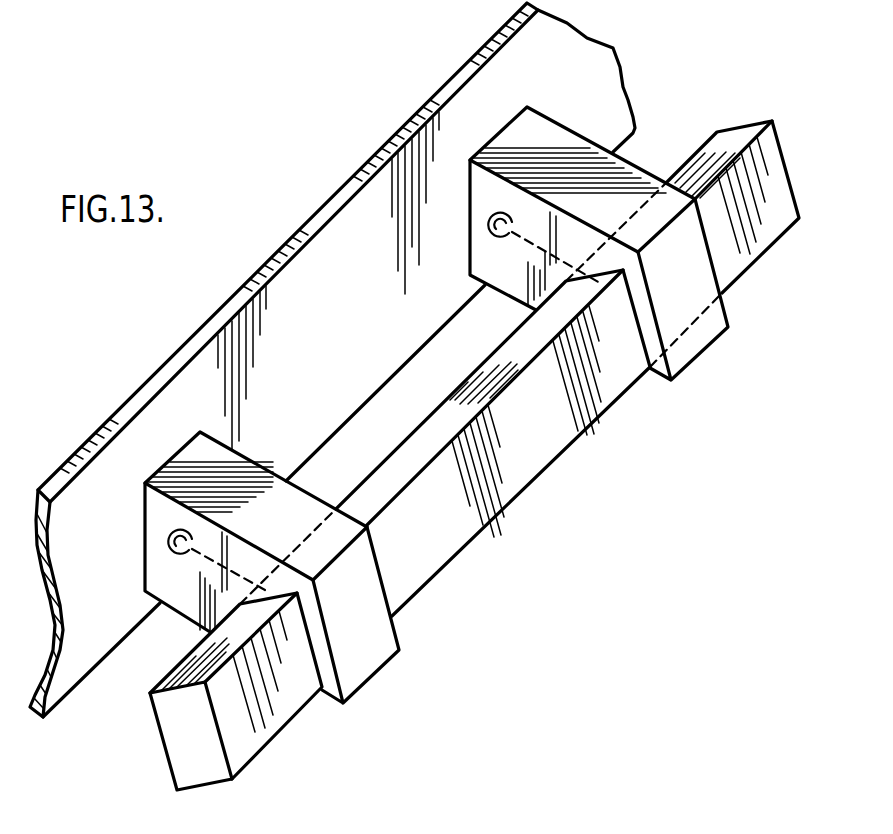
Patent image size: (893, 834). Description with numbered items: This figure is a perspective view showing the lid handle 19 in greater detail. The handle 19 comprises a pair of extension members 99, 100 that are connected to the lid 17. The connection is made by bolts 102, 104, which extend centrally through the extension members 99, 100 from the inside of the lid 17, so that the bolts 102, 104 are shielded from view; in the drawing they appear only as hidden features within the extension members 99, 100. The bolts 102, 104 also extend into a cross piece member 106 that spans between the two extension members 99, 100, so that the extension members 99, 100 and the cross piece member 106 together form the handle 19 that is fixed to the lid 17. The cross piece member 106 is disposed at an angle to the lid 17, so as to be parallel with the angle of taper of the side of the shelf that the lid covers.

The lid 17 is at (588, 58).
The handle 19 is at (438, 422).
The extension member 99 is at (296, 494).
The extension member 100 is at (573, 140).
The bolt 102 is at (204, 562).
The bolt 104 is at (545, 256).
The cross piece member 106 is at (468, 544).